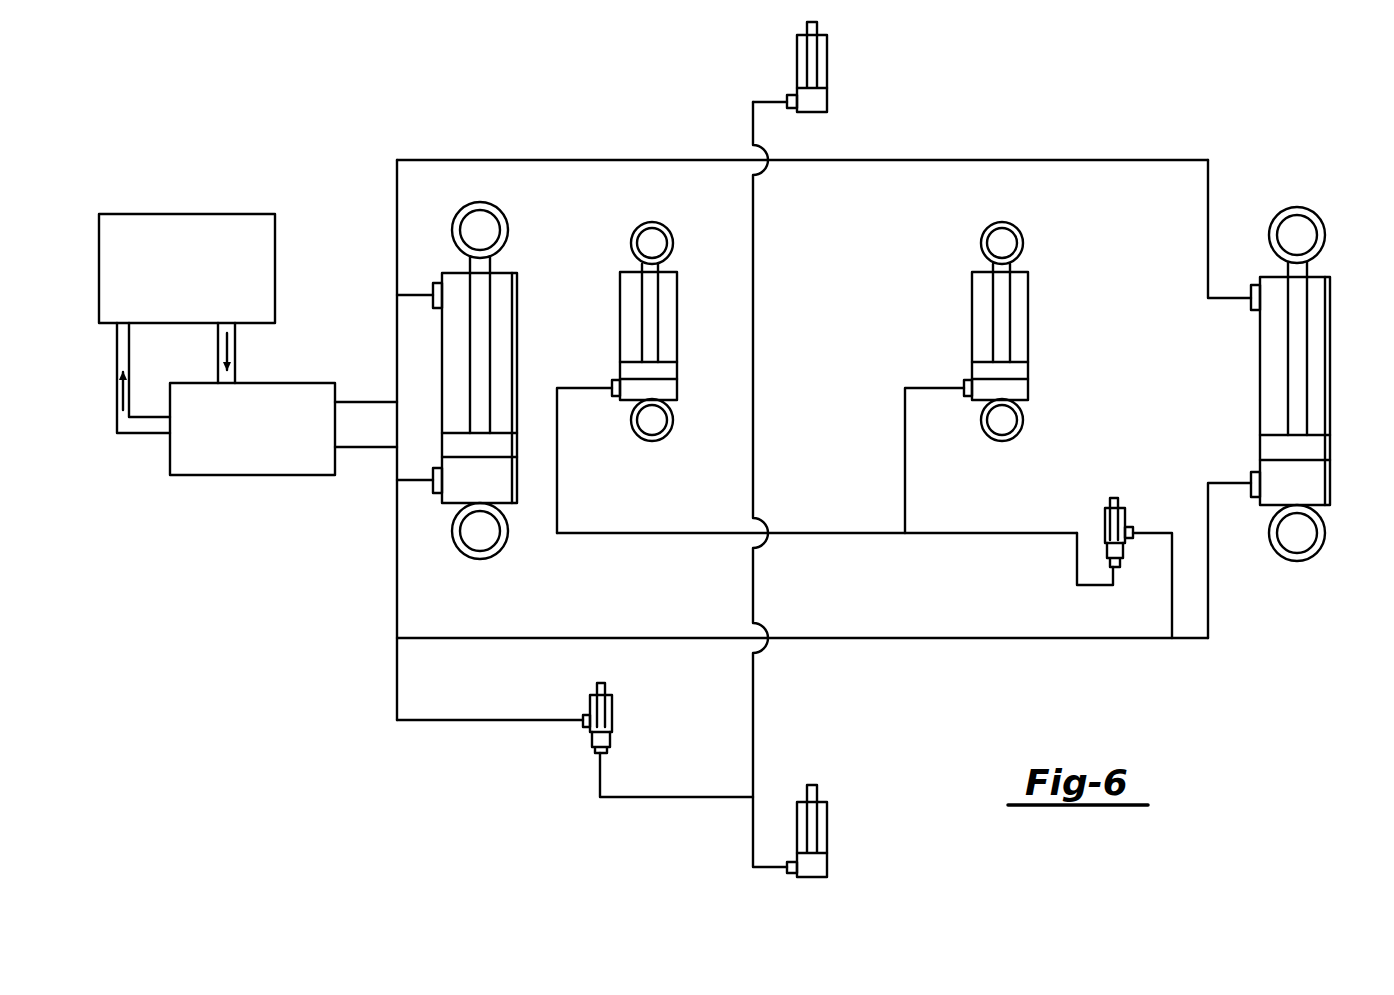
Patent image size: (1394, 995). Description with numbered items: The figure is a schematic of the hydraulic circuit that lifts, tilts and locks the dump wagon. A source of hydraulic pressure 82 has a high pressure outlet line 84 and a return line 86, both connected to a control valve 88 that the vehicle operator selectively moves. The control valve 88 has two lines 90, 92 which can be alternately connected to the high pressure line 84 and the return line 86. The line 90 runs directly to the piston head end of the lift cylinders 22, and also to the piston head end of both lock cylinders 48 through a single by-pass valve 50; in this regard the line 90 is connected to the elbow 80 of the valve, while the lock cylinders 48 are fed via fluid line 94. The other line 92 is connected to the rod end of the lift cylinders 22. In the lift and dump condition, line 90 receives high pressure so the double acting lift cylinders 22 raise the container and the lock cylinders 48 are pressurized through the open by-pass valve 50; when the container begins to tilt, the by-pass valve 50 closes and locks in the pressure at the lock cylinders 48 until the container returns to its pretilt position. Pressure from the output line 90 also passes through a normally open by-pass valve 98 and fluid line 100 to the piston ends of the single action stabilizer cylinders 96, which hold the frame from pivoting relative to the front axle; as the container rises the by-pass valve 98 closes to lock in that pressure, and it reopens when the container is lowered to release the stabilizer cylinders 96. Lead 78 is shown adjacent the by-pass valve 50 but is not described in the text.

The lift cylinders 22 is at (514, 260).
The lock cylinders 48 is at (730, 206).
The by-pass valve 50 is at (1127, 520).
The by-pass valve outlet line 78 is at (1118, 567).
The elbow 80 is at (1133, 525).
The source of hydraulic pressure 82 is at (270, 250).
The high pressure outlet line 84 is at (233, 362).
The return line 86 is at (115, 433).
The control valve 88 is at (227, 477).
The line 90 is at (367, 449).
The line 92 is at (397, 262).
The fluid line 94 is at (955, 535).
The stabilizer cylinders 96 is at (828, 78).
The by-pass valve 98 is at (612, 720).
The fluid line 100 is at (627, 797).